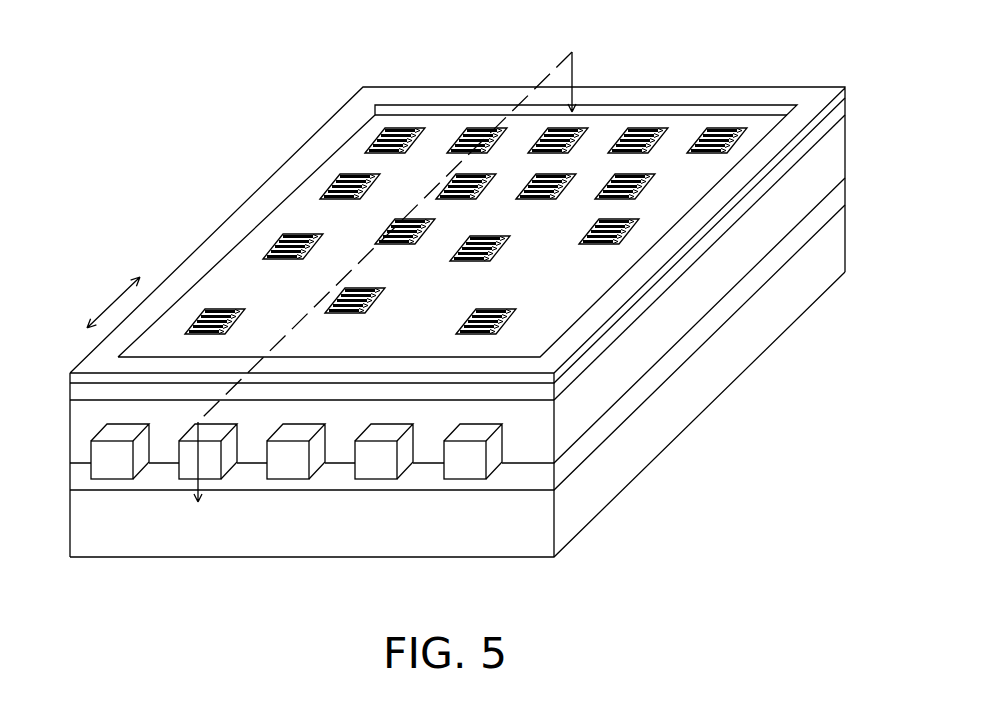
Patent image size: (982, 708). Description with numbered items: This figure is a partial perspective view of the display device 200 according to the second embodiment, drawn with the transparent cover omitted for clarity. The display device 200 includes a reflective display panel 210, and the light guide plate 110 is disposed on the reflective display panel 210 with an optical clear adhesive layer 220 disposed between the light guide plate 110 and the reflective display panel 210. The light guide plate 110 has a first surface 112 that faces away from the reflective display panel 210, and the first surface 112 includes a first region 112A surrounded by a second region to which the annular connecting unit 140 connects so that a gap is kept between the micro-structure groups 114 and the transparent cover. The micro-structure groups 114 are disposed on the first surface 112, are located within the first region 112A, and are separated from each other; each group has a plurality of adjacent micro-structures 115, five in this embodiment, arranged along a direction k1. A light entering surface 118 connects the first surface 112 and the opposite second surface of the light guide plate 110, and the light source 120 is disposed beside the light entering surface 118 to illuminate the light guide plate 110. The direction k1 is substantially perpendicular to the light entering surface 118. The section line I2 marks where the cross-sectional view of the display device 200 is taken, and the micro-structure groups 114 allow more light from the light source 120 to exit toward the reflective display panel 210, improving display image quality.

The display device 200 is at (810, 562).
The reflective display panel 210 is at (537, 528).
The optical clear adhesive layer 220 is at (537, 478).
The light guide plate 110 is at (533, 437).
The light entering surface 118 is at (167, 442).
The first surface 112 is at (699, 209).
The first region 112A is at (762, 115).
The annular connecting unit 140 is at (813, 100).
The light source 120 is at (470, 463).
The micro-structure groups 114 is at (402, 140).
The micro-structures 115 is at (351, 291).
The line I2- I2 is at (395, 292).
The direction k1 is at (113, 300).